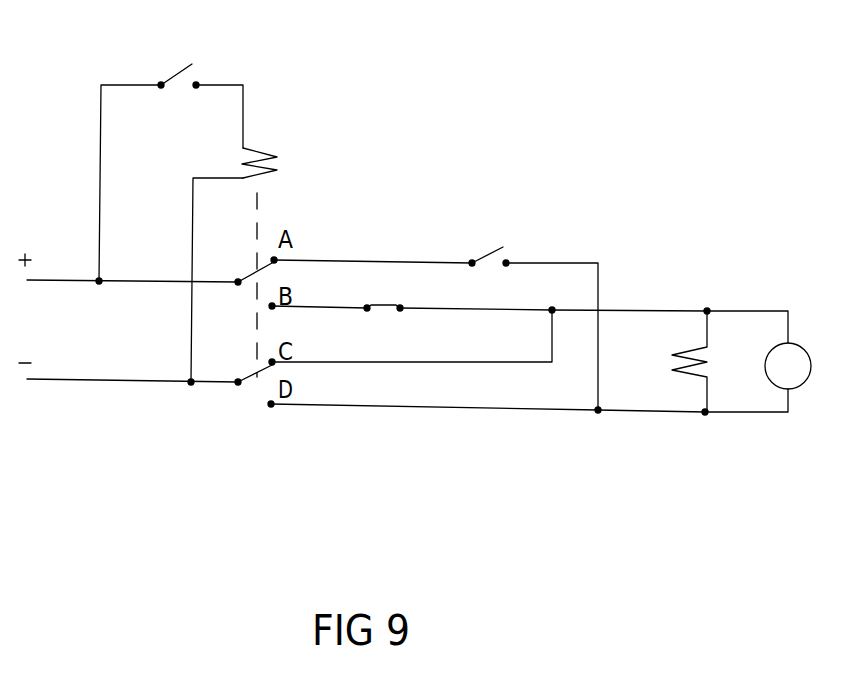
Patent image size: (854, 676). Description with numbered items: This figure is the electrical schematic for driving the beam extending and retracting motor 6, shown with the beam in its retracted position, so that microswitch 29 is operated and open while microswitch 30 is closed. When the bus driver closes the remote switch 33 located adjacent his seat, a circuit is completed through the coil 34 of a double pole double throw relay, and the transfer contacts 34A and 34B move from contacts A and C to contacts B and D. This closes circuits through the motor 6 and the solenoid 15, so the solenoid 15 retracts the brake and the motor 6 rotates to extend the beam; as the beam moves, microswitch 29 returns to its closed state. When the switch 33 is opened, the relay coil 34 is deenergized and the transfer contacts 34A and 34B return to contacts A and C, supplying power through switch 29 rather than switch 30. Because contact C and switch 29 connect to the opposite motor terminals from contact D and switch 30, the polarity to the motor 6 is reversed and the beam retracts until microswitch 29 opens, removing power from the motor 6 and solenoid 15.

The remote switch 33 is at (179, 74).
The coil of a double pole double throw relay 34 is at (262, 152).
The transfer contact 34A is at (262, 272).
The transfer contact 34B is at (260, 370).
The microswitch 29 is at (497, 247).
The microswitch 30 is at (390, 305).
The solenoid 15 is at (696, 347).
The motor 6 is at (780, 388).